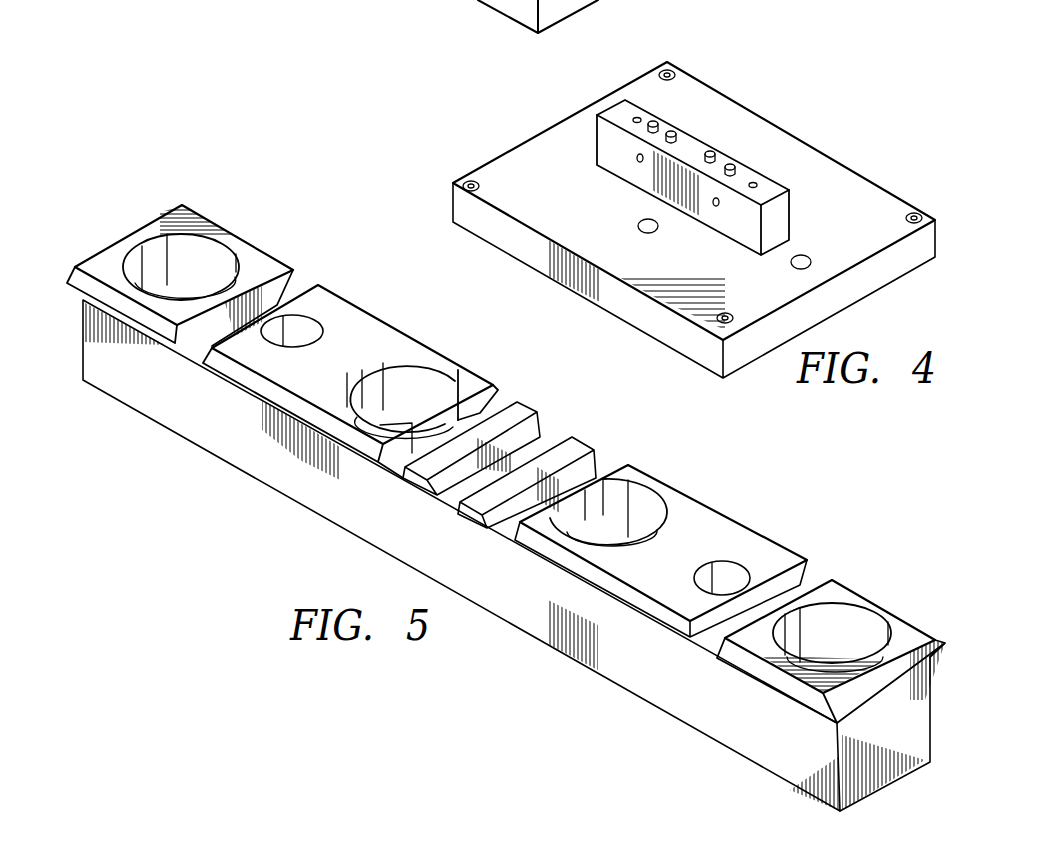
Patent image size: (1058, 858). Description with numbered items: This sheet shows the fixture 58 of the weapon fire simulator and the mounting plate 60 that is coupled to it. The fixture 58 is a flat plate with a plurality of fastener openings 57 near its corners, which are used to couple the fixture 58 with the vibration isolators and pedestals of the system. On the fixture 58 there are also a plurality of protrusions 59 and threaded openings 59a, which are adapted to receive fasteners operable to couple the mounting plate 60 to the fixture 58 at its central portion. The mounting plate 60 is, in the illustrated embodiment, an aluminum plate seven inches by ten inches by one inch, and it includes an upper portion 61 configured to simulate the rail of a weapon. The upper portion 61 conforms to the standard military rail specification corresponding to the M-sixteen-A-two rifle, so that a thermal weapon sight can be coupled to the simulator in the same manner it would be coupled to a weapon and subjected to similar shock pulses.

In FIG. 4, the fastener openings 57 is at (473, 182).
In FIG. 4, the fixture 58 is at (533, 148).
In FIG. 4, the protrusions 59 is at (673, 132).
In FIG. 4, the threaded openings 59a is at (634, 118).
In FIG. 5, the mounting plate 60 is at (164, 412).
In FIG. 5, the upper portion 61 is at (367, 327).